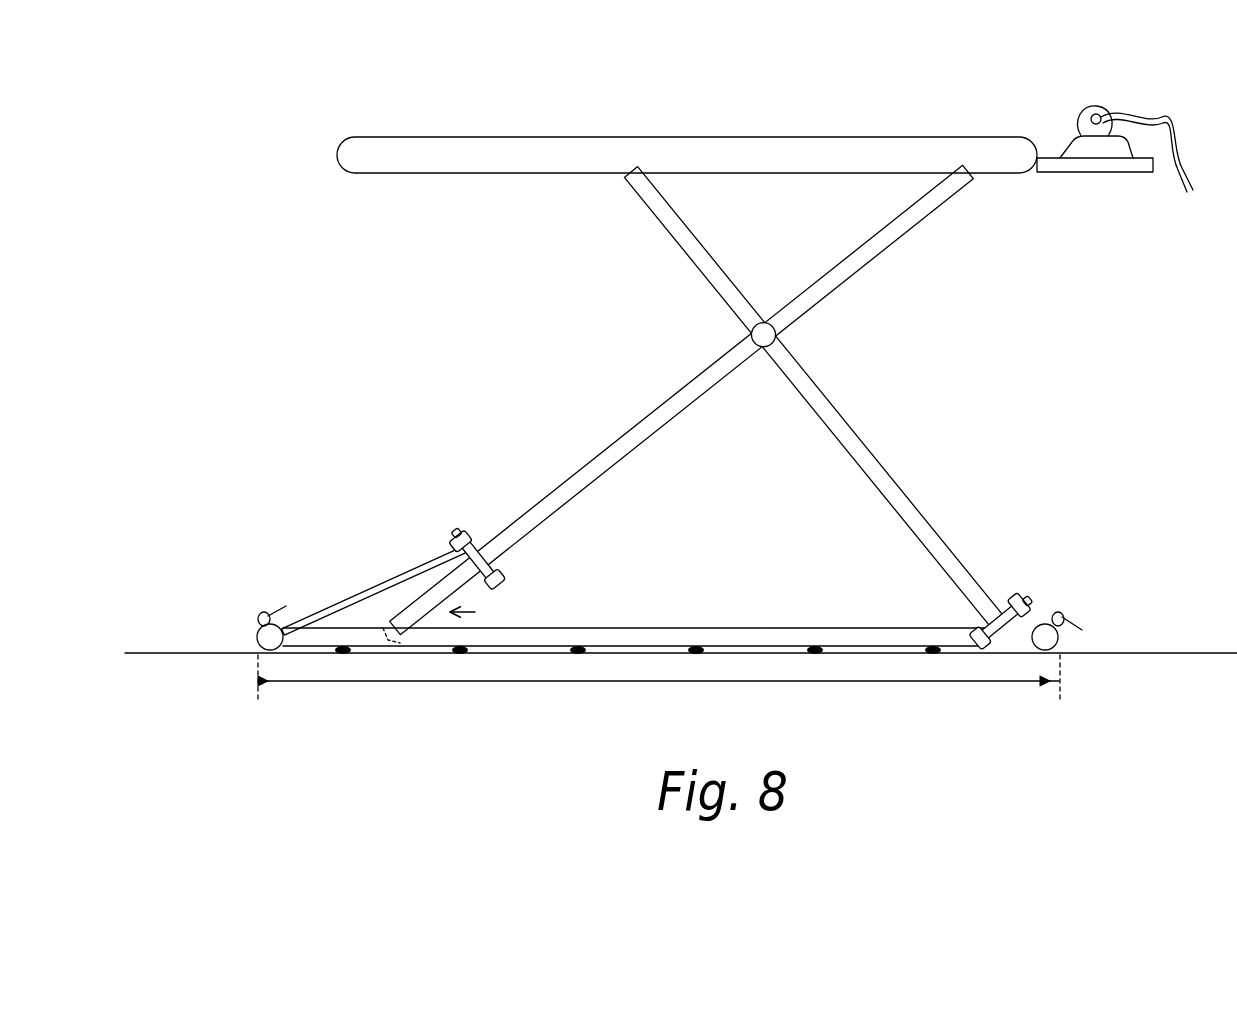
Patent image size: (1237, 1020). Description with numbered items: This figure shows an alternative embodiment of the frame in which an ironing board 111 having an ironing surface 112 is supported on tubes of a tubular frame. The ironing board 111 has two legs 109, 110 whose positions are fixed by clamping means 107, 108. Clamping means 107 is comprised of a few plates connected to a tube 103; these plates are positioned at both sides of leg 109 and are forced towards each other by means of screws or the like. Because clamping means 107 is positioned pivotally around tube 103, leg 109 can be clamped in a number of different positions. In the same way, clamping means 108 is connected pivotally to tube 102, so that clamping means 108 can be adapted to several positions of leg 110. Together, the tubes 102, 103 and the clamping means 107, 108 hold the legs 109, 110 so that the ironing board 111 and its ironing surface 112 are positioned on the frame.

The tube 102 is at (258, 634).
The tube 103 is at (1080, 641).
The clamping means 107 is at (1022, 598).
The clamping means 108 is at (465, 512).
The leg 109 is at (862, 456).
The leg 110 is at (655, 412).
The ironing board 111 is at (375, 228).
The ironing surface 112 is at (487, 150).